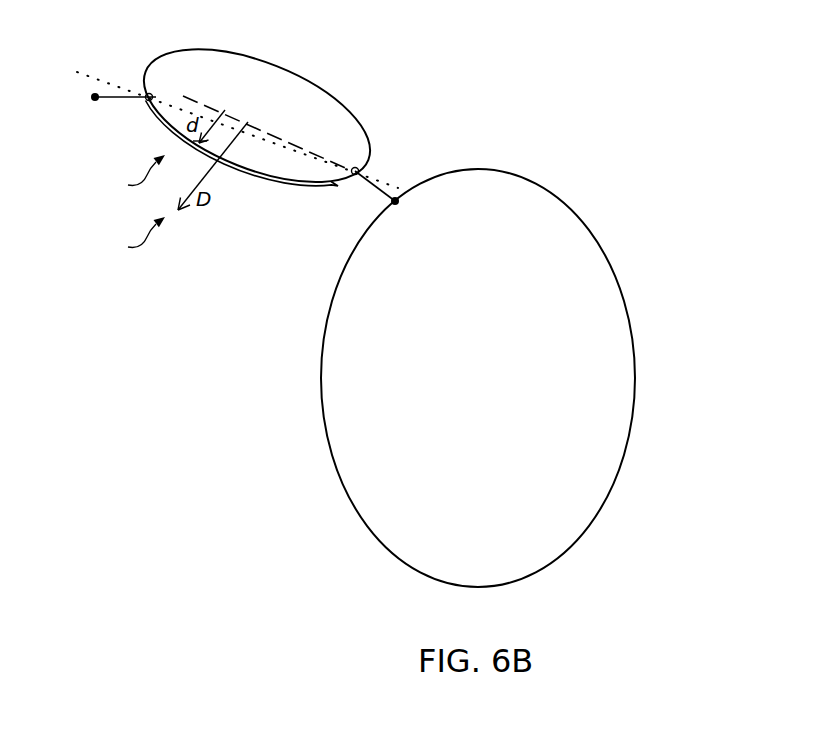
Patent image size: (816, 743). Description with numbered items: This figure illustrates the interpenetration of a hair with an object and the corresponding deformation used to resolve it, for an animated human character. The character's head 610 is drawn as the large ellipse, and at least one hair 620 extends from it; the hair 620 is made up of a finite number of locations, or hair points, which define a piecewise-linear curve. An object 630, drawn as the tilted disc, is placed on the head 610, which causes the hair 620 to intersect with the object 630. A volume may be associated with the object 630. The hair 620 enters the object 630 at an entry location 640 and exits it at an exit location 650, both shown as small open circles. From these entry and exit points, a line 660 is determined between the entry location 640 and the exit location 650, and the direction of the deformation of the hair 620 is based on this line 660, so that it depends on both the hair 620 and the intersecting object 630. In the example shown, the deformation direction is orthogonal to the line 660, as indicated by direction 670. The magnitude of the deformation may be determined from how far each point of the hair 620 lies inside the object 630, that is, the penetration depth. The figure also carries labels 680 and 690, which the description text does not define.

The head 610 is at (636, 380).
The hair 620 is at (297, 188).
The object 630 is at (278, 67).
The entry location 640 is at (359, 169).
The exit location 650 is at (145, 101).
The line 660 is at (103, 67).
The direction 670 is at (126, 238).
The direction arrow 680 is at (126, 176).
The offset reference line 690 is at (183, 95).